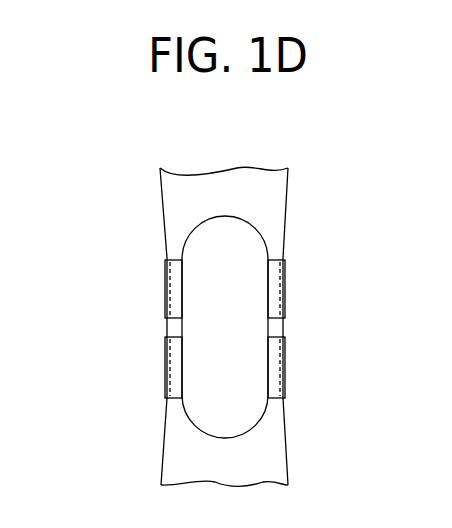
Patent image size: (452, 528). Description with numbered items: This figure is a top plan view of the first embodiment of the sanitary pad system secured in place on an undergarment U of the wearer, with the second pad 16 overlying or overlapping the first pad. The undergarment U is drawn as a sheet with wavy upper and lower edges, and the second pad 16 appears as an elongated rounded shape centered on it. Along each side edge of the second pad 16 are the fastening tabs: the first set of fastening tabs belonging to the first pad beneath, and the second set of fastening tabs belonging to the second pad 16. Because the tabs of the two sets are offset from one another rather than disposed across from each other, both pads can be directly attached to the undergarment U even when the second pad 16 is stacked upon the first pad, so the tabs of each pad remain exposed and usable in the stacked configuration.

The undergarment U is at (273, 198).
The second pad 16 is at (208, 333).